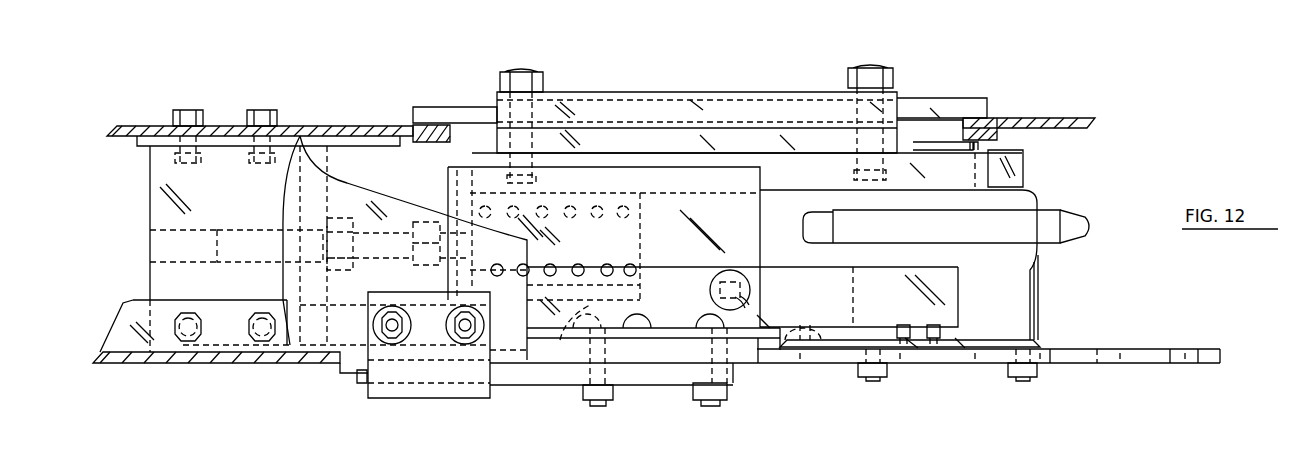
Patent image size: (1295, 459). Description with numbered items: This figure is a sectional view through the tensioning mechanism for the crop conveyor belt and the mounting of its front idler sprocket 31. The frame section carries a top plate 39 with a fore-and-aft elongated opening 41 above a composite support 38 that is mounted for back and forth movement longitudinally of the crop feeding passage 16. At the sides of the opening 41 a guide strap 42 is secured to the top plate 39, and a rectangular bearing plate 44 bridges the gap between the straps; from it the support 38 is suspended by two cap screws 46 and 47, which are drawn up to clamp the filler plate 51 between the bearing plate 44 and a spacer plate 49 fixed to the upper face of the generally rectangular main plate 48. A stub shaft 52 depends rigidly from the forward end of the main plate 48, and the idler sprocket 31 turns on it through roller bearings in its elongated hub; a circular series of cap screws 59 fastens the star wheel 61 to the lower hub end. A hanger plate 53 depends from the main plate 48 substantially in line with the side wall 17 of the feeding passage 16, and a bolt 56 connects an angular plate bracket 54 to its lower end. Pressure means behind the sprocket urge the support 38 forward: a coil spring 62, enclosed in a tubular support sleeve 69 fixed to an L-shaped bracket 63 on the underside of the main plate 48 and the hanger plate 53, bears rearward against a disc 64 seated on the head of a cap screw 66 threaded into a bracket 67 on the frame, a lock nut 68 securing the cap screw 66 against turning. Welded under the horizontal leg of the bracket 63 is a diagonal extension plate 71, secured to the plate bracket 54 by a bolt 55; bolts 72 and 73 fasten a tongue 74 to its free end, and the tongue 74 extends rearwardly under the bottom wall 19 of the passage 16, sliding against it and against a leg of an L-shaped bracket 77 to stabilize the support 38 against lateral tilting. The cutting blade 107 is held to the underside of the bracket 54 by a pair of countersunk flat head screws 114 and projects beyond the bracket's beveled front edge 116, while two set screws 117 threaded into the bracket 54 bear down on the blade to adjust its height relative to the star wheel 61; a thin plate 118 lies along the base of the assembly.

The crop feeding passage 16 is at (210, 343).
The side wall 17 is at (137, 300).
The bottom wall 19 is at (122, 363).
The front idler sprocket 31 is at (1055, 225).
The composite support 38 is at (1035, 180).
The top plate 39 is at (362, 126).
The elongated opening 41 is at (440, 107).
The guide strap 42 is at (965, 98).
The bearing plate 44 is at (640, 92).
The cap screw 46 is at (870, 68).
The cap screw 47 is at (521, 72).
The main plate 48 is at (1020, 167).
The spacer plate 49 is at (497, 146).
The filler plate 51 is at (573, 108).
The stub shaft 52 is at (980, 148).
The hanger plate 53 is at (760, 226).
The plate bracket 54 is at (958, 290).
The bolt 55 is at (640, 325).
The bolt 56 is at (750, 290).
The cap screws 59 is at (873, 378).
The star wheel 61 is at (1118, 363).
The coil spring 62 is at (575, 265).
The L-shaped bracket 63 is at (618, 300).
The disc 64 is at (450, 210).
The cap screw 66 is at (408, 222).
The bracket 67 is at (150, 218).
The lock nut 68 is at (340, 218).
The tubular support sleeve 69 is at (570, 195).
The diagonal extension plate 71 is at (745, 358).
The bolt 72 is at (724, 405).
The bolt 73 is at (606, 403).
The tongue 74 is at (535, 378).
The L-shaped bracket 77 is at (432, 398).
The cutting blade 107 is at (948, 349).
The flat head screws 114 is at (835, 325).
The beveled front edge 116 is at (950, 338).
The set screws 117 is at (930, 325).
The thin plate 118 is at (1000, 343).